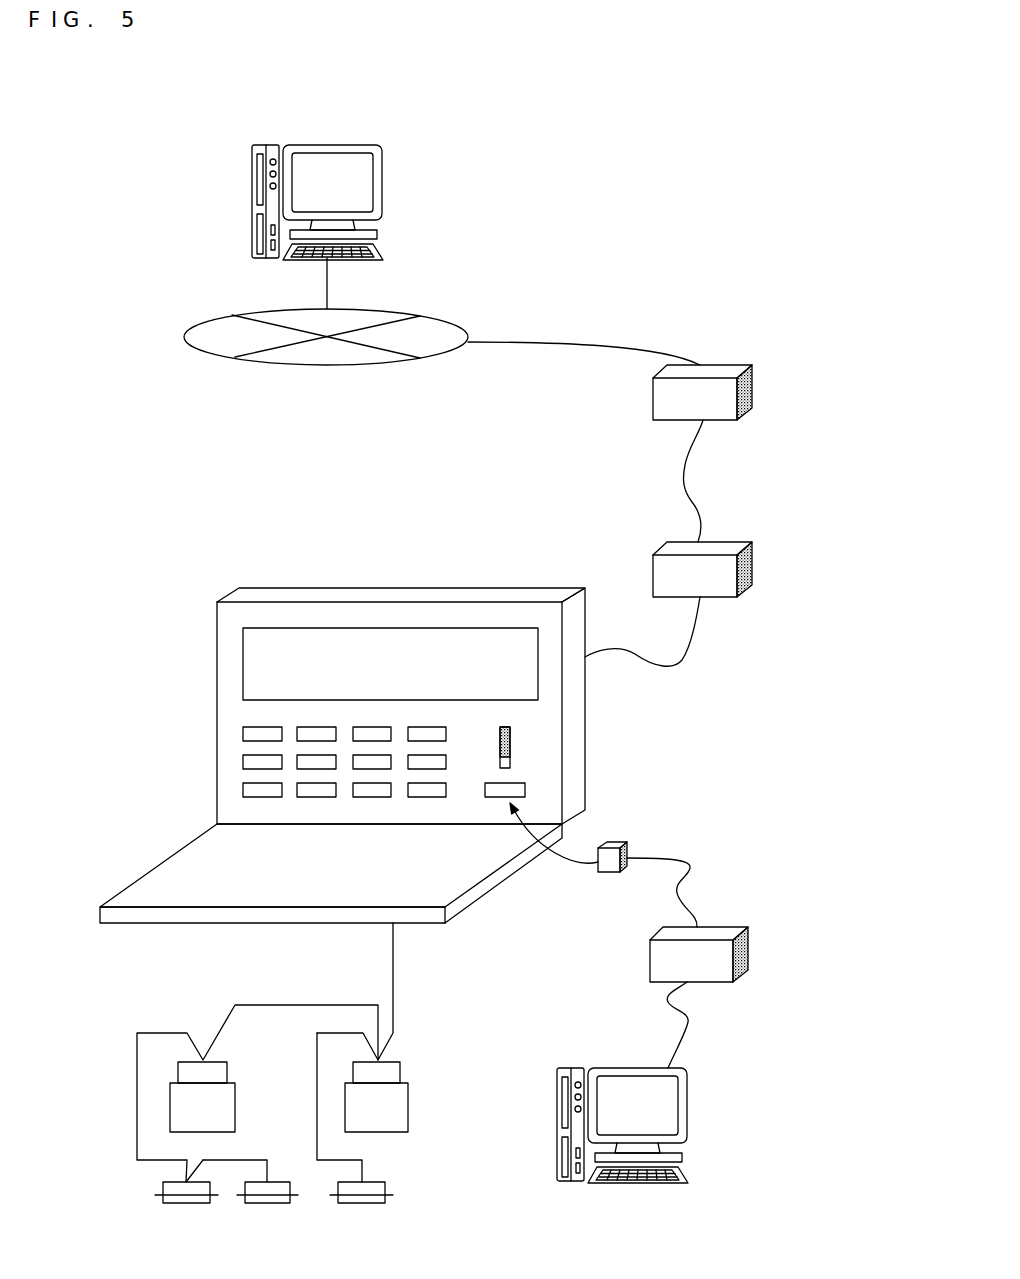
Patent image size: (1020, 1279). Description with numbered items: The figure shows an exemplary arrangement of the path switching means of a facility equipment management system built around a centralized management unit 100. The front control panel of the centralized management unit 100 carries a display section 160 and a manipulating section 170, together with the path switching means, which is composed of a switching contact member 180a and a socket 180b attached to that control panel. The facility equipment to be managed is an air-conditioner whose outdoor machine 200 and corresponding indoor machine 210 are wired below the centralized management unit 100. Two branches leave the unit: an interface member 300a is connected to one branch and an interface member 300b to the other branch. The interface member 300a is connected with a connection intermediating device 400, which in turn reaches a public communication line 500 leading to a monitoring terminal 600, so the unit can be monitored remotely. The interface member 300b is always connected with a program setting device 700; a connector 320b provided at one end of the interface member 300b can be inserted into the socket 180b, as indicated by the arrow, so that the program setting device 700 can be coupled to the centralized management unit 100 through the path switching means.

The monitoring terminal 600 is at (382, 202).
The public communication line 500 is at (435, 317).
The connection intermediating device 400 is at (718, 364).
The interface member 300a is at (720, 542).
The centralized management unit 100 is at (408, 669).
The display section 160 is at (265, 628).
The manipulating section 170 is at (243, 738).
The switching contact member 180a is at (510, 742).
The socket 180b is at (510, 782).
The connector 320b is at (622, 848).
The interface member 300b is at (717, 927).
The outdoor machine 200 is at (170, 1107).
The indoor machine 210 is at (163, 1182).
The program setting device 700 is at (688, 1130).